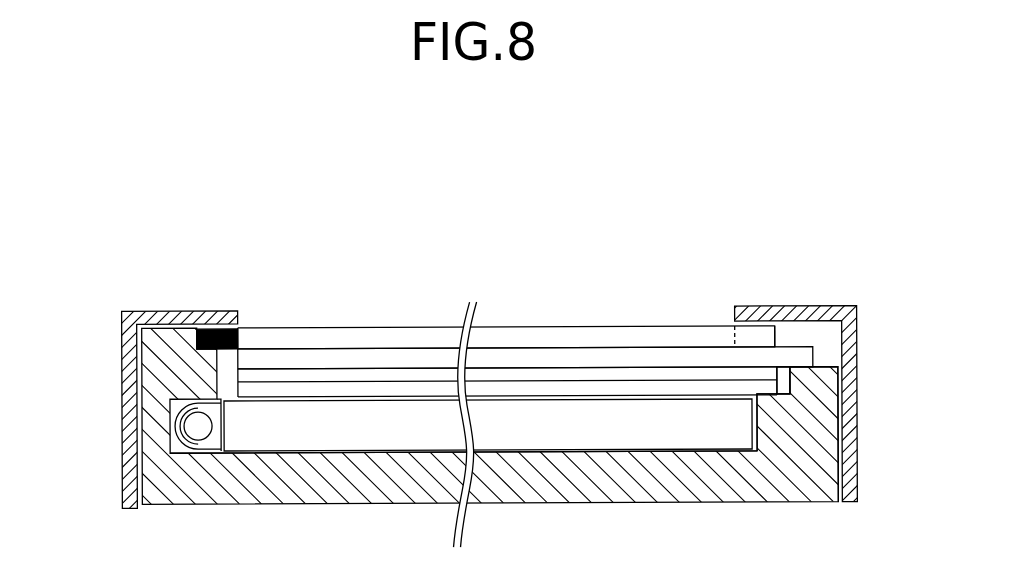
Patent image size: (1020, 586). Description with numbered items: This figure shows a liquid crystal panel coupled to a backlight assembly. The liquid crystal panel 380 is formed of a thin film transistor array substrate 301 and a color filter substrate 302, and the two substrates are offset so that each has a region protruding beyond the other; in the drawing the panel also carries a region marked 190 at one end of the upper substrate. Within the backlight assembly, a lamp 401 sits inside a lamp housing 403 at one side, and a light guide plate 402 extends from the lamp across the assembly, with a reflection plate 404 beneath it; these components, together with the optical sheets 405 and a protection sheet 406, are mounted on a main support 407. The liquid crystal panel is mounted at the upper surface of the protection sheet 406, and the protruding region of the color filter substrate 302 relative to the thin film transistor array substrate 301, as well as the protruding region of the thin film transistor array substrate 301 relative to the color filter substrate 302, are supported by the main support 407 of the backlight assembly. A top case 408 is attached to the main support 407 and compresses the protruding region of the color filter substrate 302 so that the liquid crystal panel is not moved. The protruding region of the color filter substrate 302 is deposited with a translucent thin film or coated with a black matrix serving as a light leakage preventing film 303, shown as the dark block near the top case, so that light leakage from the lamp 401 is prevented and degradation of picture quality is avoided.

The driving chip 190 is at (760, 335).
The thin film transistor array substrate 301 is at (512, 355).
The color filter substrate 302 is at (587, 338).
The light leakage preventing film 303 is at (222, 327).
The display panel 380 is at (735, 277).
The lamp 401 is at (198, 425).
The light guide plate 402 is at (377, 427).
The lamp housing 403 is at (187, 455).
The reflection plate 404 is at (317, 453).
The optical sheets 405 is at (787, 387).
The protection sheet 406 is at (780, 380).
The main support 407 is at (250, 480).
The top case 408 is at (130, 373).